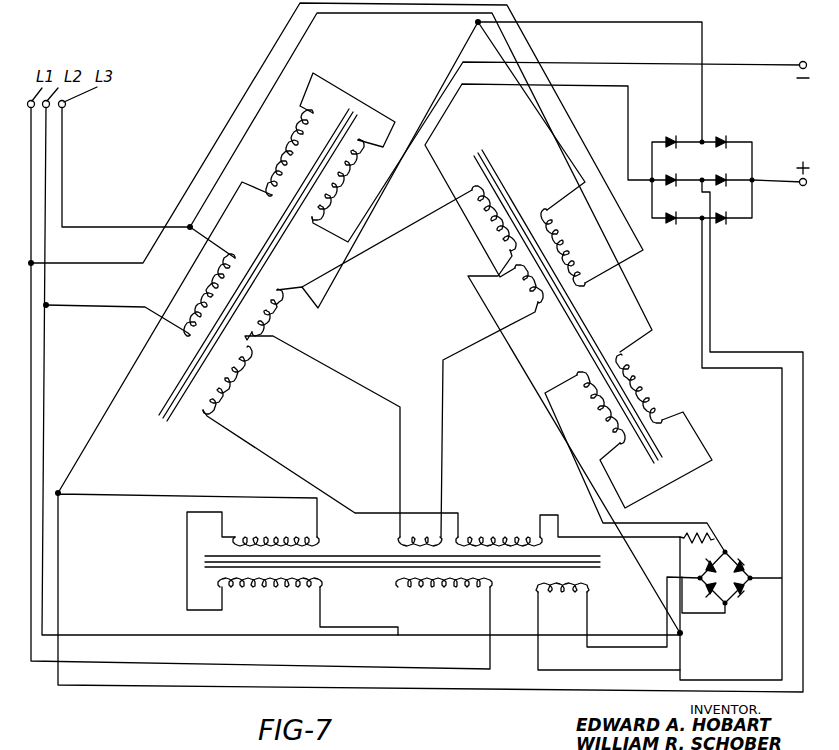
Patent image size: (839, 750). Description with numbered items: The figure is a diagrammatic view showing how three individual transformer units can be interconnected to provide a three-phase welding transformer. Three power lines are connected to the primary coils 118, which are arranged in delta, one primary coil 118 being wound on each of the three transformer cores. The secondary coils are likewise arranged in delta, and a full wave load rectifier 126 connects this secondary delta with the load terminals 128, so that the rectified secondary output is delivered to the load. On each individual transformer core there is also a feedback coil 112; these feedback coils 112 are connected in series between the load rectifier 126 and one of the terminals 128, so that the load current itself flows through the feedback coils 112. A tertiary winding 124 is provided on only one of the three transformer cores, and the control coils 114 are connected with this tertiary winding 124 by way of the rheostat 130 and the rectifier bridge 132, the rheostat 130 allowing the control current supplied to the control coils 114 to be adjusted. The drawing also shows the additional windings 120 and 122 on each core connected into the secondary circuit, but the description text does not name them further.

The feedback coils 112 is at (400, 534).
The control coils 114 is at (517, 537).
The primary coils 118 is at (420, 592).
The transformer winding 120 is at (250, 592).
The transformer winding 122 is at (240, 530).
The tertiary winding 124 is at (587, 600).
The full wave load rectifier 126 is at (729, 158).
The load terminals 128 is at (803, 186).
The rheostat 130 is at (705, 536).
The rectifier bridge 132 is at (730, 568).